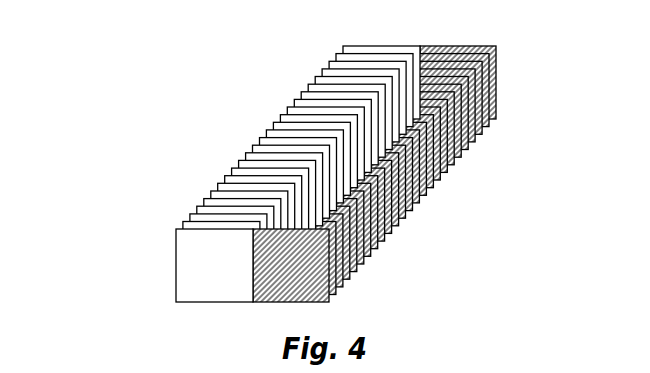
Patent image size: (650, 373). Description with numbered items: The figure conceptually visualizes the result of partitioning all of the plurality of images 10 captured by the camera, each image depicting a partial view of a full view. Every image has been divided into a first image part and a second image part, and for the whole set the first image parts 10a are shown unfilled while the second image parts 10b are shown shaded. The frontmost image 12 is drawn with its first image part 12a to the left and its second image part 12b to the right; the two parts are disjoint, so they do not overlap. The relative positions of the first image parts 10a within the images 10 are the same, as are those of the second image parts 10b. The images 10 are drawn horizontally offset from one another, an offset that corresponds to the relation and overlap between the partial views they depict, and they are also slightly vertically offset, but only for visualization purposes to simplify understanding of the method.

The plurality of images 10 is at (92, 48).
The first image parts 10a is at (215, 124).
The second image parts 10b is at (474, 202).
The image 12 is at (176, 250).
The first image part 12a is at (237, 277).
The second image part 12b is at (311, 277).